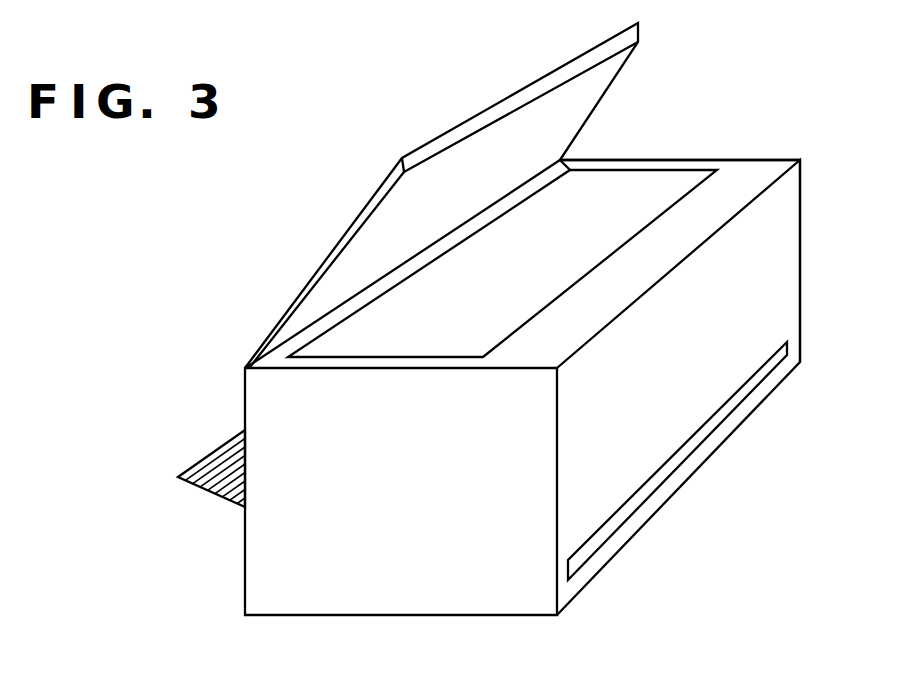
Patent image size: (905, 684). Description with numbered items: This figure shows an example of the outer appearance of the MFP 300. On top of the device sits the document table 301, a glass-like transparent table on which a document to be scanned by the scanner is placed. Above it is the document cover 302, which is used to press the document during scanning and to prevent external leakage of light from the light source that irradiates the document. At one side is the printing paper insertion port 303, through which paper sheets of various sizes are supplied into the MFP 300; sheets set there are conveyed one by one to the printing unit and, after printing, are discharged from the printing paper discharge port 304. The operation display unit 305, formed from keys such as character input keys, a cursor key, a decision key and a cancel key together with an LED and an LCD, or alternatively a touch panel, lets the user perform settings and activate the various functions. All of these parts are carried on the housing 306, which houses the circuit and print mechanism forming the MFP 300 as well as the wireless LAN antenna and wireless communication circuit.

The MFP 300 is at (390, 590).
The document table 301 is at (611, 188).
The document cover 302 is at (537, 81).
The printing paper insertion port 303 is at (223, 447).
The printing paper discharge port 304 is at (707, 432).
The operation display unit 305 is at (642, 265).
The housing 306 is at (767, 275).